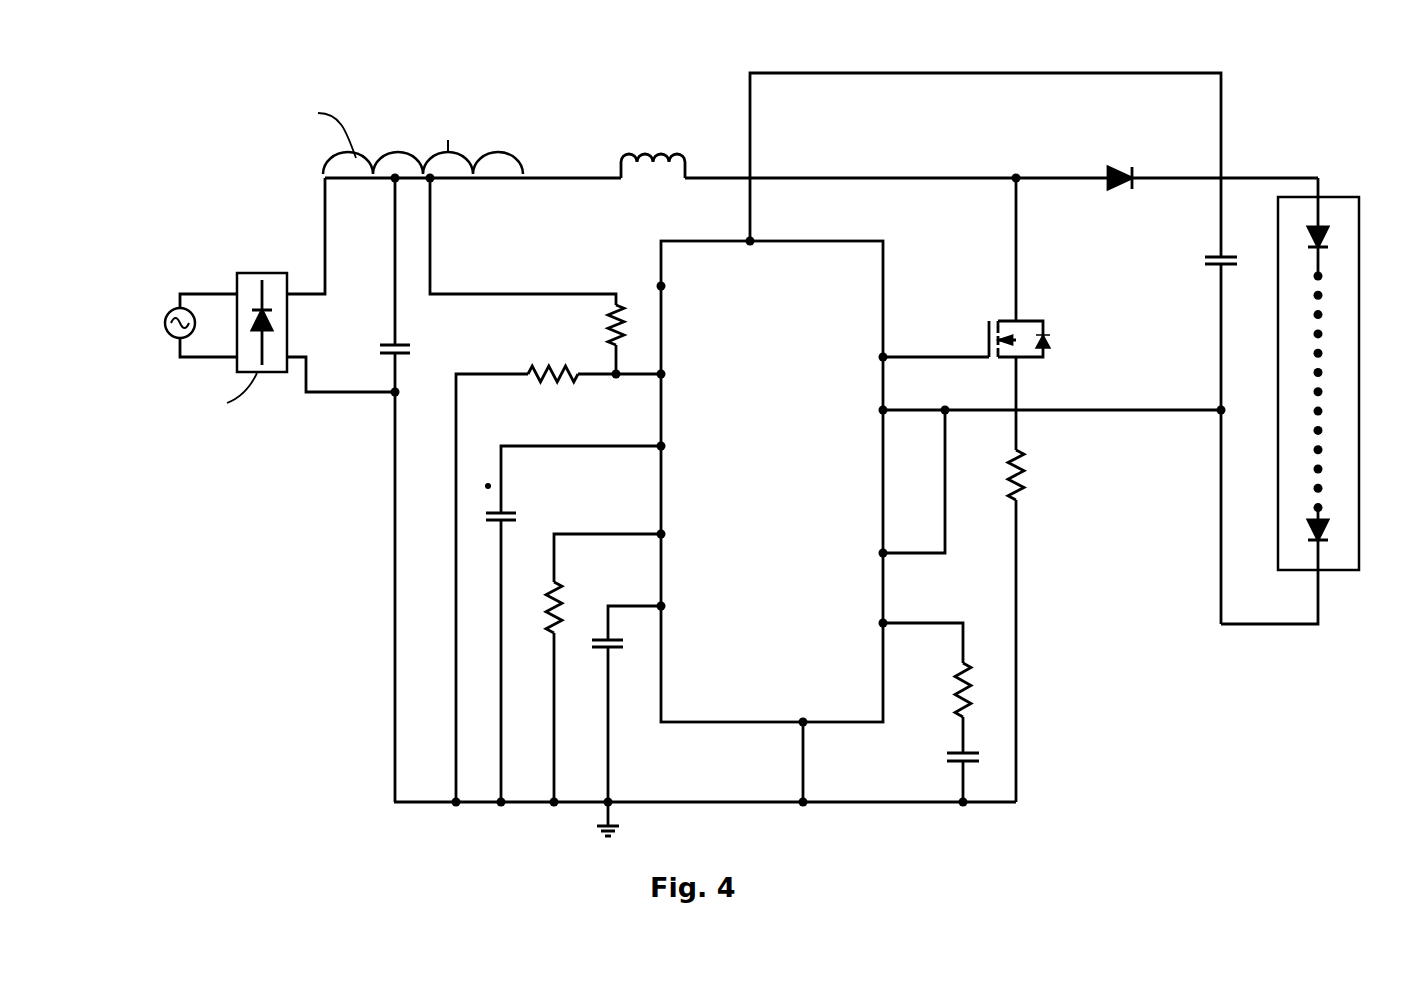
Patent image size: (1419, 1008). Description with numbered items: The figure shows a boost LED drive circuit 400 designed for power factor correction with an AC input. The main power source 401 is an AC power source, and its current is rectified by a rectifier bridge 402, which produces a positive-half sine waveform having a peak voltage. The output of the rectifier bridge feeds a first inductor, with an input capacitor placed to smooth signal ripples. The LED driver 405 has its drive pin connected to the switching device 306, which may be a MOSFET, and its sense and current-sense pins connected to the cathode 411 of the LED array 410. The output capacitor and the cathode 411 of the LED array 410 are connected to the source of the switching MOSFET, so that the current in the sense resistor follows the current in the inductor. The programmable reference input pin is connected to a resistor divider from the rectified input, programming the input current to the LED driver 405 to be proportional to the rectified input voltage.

The boost LED drive circuit 400 is at (666, 97).
The main power source 401 is at (170, 309).
The rectifier bridge 402 is at (237, 278).
The LED driver 405 is at (803, 241).
The switching device 306 is at (1038, 321).
The LED array 410 is at (1360, 236).
The cathode 411 is at (1320, 571).